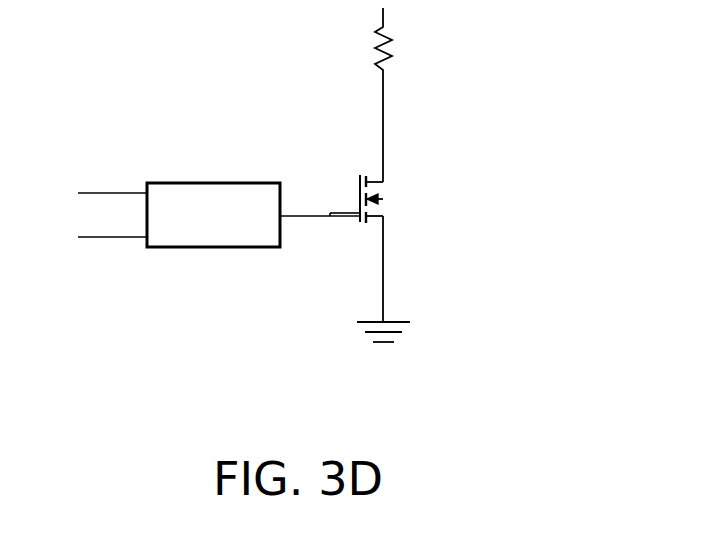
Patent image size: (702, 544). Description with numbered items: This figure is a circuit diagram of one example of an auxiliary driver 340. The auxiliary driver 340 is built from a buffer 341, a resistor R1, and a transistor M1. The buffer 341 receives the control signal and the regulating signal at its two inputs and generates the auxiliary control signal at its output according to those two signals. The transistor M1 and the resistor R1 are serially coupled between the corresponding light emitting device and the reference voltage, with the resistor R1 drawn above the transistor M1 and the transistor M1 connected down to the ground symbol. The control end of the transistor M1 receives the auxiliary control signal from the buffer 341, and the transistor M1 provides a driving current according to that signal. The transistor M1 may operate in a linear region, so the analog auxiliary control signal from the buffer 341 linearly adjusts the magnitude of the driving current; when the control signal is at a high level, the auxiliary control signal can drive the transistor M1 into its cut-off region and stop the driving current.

The auxiliary driver 340 is at (527, 378).
The buffer 341 is at (213, 183).
The resistor R1 is at (402, 95).
The transistor M1 is at (376, 248).